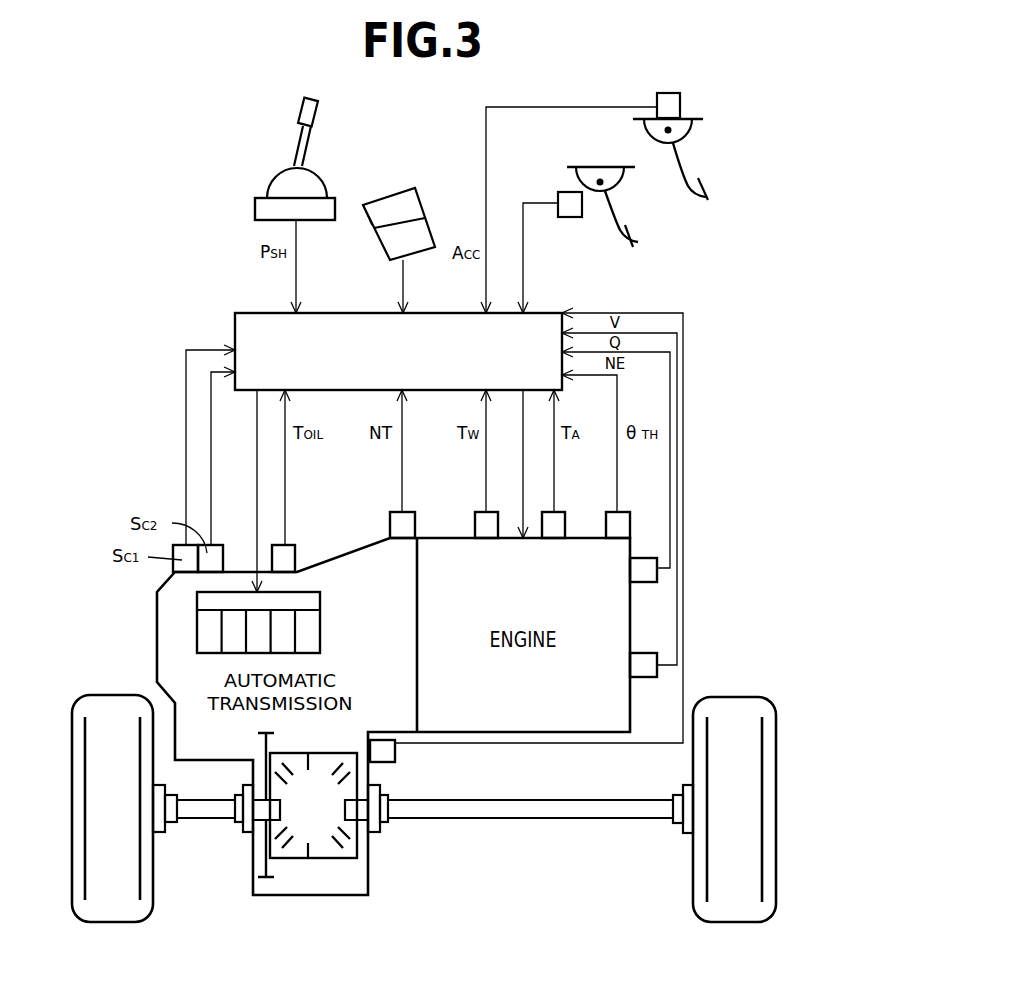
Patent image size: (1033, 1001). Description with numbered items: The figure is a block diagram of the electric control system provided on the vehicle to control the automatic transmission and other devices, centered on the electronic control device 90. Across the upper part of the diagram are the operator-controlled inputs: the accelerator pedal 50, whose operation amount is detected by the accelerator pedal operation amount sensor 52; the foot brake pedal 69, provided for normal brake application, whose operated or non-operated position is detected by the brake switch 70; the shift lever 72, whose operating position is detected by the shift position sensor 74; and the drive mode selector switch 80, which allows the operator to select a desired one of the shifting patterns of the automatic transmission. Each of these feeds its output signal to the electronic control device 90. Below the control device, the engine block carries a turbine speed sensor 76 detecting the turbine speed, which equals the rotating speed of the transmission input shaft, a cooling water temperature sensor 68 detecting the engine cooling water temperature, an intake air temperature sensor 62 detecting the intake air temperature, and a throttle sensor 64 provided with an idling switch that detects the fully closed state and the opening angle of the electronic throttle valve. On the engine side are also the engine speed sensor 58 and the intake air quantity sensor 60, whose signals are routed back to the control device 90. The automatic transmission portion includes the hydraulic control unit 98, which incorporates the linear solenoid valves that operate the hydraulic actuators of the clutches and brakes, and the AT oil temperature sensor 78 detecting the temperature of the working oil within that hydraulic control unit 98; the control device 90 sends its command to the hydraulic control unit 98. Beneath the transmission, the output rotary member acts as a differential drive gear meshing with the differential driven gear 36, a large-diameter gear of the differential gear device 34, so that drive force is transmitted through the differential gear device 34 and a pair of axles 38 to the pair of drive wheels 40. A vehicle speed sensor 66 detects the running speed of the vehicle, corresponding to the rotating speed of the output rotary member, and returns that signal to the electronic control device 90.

The differential gear device 34 is at (352, 874).
The differential driven gear 36 is at (270, 880).
The axles 38 is at (198, 808).
The drive wheels 40 is at (113, 905).
The accelerator pedal 50 is at (710, 195).
The accelerator pedal operation amount sensor 52 is at (668, 107).
The engine speed sensor 58 is at (645, 573).
The intake air quantity sensor 60 is at (645, 670).
The intake air temperature sensor 62 is at (555, 528).
The throttle sensor 64 is at (623, 528).
The vehicle speed sensor 66 is at (385, 757).
The cooling water temperature sensor 68 is at (483, 528).
The foot brake pedal 69 is at (637, 240).
The brake switch 70 is at (570, 210).
The shift lever 72 is at (306, 137).
The shift position sensor 74 is at (262, 207).
The turbine speed sensor 76 is at (397, 528).
The AT oil temperature sensor 78 is at (288, 558).
The drive mode selector switch 80 is at (407, 195).
The electronic control device 90 is at (336, 323).
The hydraulic control unit 98 is at (208, 602).